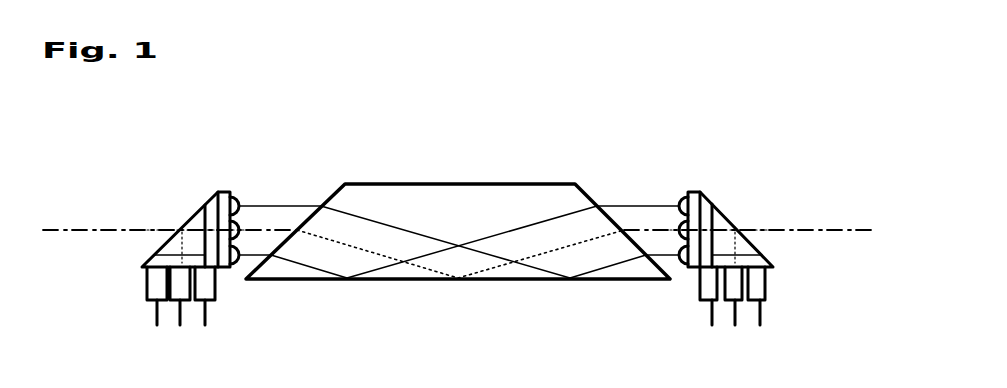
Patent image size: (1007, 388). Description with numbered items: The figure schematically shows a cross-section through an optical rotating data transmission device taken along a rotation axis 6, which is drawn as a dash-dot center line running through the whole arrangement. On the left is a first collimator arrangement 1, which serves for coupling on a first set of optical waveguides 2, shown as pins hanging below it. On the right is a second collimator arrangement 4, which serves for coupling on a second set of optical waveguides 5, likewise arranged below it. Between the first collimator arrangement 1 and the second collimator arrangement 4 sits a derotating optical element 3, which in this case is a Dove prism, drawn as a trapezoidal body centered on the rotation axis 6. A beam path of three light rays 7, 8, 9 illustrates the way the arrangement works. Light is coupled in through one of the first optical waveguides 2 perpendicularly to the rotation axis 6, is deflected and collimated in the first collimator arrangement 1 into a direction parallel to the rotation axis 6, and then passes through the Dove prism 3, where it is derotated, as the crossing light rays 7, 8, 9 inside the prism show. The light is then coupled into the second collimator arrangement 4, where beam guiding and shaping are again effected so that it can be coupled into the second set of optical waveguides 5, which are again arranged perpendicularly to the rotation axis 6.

The first collimator arrangement 1 is at (185, 205).
The first set of optical waveguides 2 is at (222, 313).
The derotating optical element 3 is at (564, 158).
The second collimator arrangement 4 is at (725, 202).
The second set of optical waveguides 5 is at (697, 313).
The rotation axis 6 is at (92, 243).
The light ray 7 is at (240, 202).
The light ray 8 is at (252, 227).
The light ray 9 is at (260, 248).